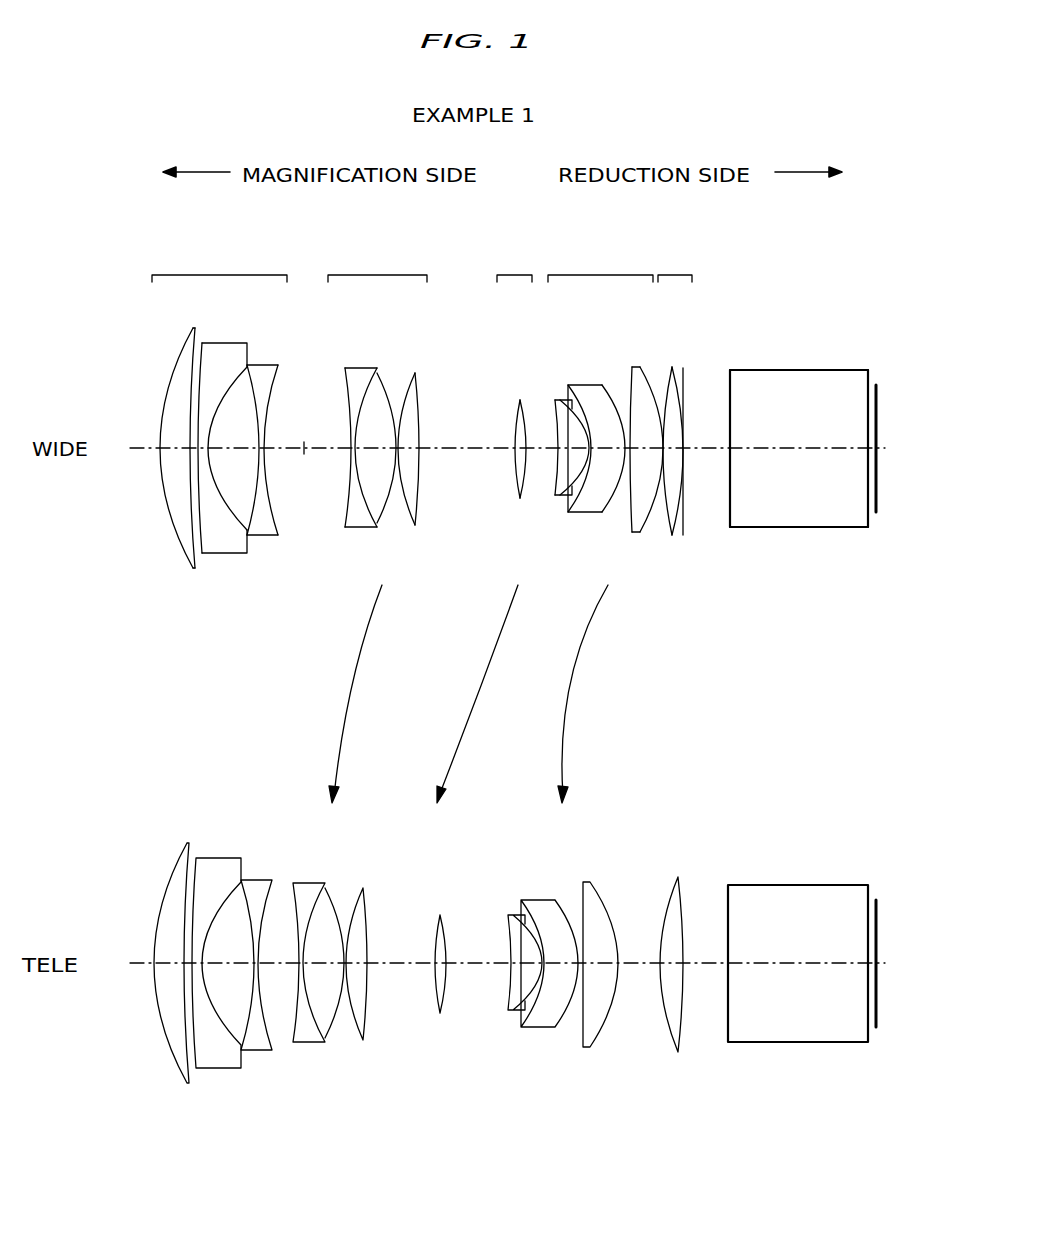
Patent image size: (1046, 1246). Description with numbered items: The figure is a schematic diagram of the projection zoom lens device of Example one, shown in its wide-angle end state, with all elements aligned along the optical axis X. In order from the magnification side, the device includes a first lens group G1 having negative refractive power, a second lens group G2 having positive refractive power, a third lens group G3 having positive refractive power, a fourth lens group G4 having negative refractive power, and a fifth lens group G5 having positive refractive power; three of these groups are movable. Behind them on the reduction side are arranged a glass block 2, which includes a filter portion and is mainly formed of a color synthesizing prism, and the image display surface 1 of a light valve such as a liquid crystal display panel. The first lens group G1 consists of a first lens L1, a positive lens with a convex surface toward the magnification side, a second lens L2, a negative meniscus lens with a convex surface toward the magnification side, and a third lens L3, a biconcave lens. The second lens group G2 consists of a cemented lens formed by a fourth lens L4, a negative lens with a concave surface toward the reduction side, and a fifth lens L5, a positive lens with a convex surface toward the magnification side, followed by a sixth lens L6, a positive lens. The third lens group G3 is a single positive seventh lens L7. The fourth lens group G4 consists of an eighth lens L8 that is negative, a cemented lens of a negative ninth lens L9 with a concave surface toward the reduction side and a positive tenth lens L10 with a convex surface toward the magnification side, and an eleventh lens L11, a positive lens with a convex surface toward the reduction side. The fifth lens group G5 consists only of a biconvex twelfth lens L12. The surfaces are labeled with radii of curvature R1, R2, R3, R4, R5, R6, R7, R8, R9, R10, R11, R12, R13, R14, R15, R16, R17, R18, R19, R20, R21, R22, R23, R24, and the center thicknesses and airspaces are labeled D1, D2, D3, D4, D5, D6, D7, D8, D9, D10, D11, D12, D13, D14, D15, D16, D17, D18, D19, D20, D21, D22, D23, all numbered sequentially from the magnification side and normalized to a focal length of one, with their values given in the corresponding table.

The image display surface 1 is at (878, 468).
The glass block 2 is at (812, 528).
The optical axis X is at (304, 444).
The first lens group G1 is at (214, 417).
The second lens group G2 is at (387, 406).
The third lens group G3 is at (499, 391).
The fourth lens group G4 is at (609, 439).
The fifth lens group G5 is at (691, 405).
The first lens L1 is at (180, 558).
The second lens L2 is at (210, 553).
The third lens L3 is at (272, 536).
The fourth lens L4 is at (350, 528).
The fifth lens L5 is at (382, 526).
The sixth lens L6 is at (414, 527).
The seventh lens L7 is at (518, 500).
The eighth lens L8 is at (556, 498).
The ninth lens L9 is at (583, 512).
The tenth lens L10 is at (632, 532).
The eleventh lens L11 is at (668, 535).
The twelfth lens L12 is at (684, 536).
The radius of curvature of lens surface R1 is at (172, 374).
The radius of curvature of lens surface R2 is at (196, 334).
The radius of curvature of lens surface R3 is at (207, 343).
The radius of curvature of lens surface R4 is at (243, 352).
The radius of curvature of lens surface R5 is at (258, 375).
The radius of curvature of lens surface R6 is at (278, 382).
The radius of curvature of lens surface R7 is at (345, 372).
The radius of curvature of lens surface R8 is at (372, 368).
The radius of curvature of lens surface R9 is at (388, 376).
The radius of curvature of lens surface R10 is at (400, 378).
The radius of curvature of lens surface R11 is at (420, 388).
The radius of curvature of lens surface R12 is at (514, 400).
The radius of curvature of lens surface R13 is at (522, 398).
The radius of curvature of lens surface R14 is at (555, 398).
The radius of curvature of lens surface R15 is at (562, 398).
The radius of curvature of lens surface R16 is at (571, 384).
The radius of curvature of lens surface R17 is at (601, 384).
The radius of curvature of lens surface R18 is at (631, 380).
The radius of curvature of lens surface R19 is at (643, 378).
The radius of curvature of lens surface R20 is at (672, 364).
The radius of curvature of lens surface R21 is at (685, 394).
The radius of curvature of lens surface R22 is at (701, 439).
The radius of curvature of surface R23 is at (732, 372).
The radius of curvature of surface R24 is at (868, 372).
The center thickness or airspace D1 is at (176, 447).
The center thickness or airspace D2 is at (195, 452).
The center thickness or airspace D3 is at (204, 460).
The center thickness or airspace D4 is at (218, 446).
The center thickness or airspace D5 is at (265, 452).
The center thickness or airspace D6 is at (303, 452).
The center thickness or airspace D7 is at (352, 446).
The center thickness or airspace D8 is at (358, 452).
The center thickness or airspace D9 is at (404, 446).
The center thickness or airspace D10 is at (410, 454).
The center thickness or airspace D11 is at (512, 452).
The center thickness or airspace D12 is at (516, 446).
The center thickness or airspace D13 is at (521, 452).
The center thickness or airspace D14 is at (548, 482).
The center thickness or airspace D15 is at (556, 500).
The center thickness or airspace D16 is at (570, 512).
The center thickness or airspace D17 is at (610, 500).
The center thickness or airspace D18 is at (650, 525).
The center thickness or airspace D19 is at (662, 540).
The center thickness or airspace D20 is at (682, 480).
The center thickness or airspace D21 is at (680, 462).
The center thickness or airspace D22 is at (712, 434).
The center thickness or airspace D23 is at (778, 450).